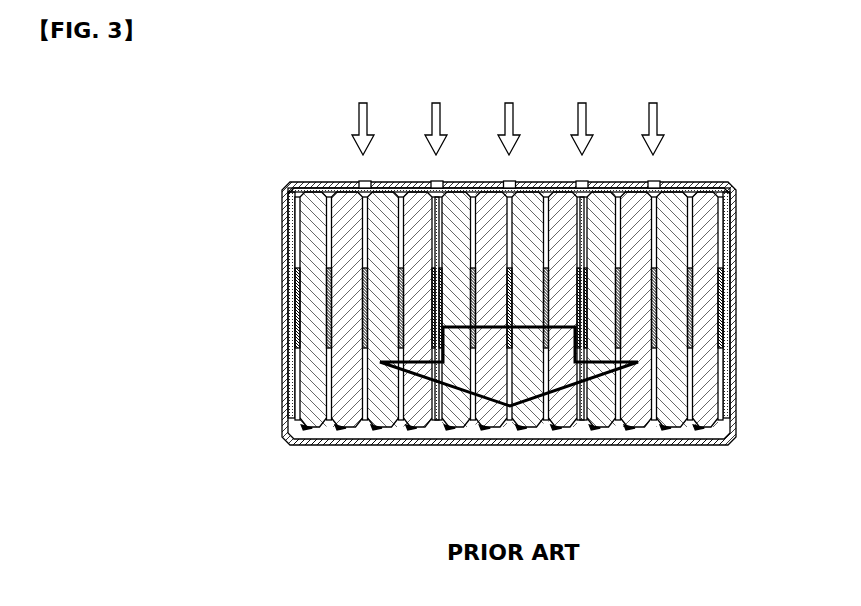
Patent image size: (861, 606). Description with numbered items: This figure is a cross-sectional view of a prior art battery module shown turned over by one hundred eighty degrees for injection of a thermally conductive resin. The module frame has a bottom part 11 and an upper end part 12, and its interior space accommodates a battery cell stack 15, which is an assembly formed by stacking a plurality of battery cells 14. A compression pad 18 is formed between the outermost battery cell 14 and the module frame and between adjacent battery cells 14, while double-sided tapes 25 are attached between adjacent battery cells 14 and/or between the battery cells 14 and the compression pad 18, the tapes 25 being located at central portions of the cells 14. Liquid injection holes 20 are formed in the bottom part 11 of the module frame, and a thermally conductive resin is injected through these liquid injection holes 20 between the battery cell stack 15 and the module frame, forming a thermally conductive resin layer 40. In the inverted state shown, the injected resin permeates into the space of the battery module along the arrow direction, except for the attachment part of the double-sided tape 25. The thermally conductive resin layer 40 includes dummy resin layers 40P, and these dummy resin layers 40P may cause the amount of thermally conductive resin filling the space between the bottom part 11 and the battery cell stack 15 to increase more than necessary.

The bottom part 11 is at (700, 182).
The upper end part 12 is at (606, 446).
The battery cell 14 is at (543, 311).
The battery cell stack 15 is at (690, 233).
The compression pad 18 is at (432, 257).
The liquid injection hole 20 is at (510, 181).
The double-sided tape 25 is at (515, 308).
The thermally conductive resin layer 40 is at (473, 181).
The dummy resin layer 40P is at (297, 222).